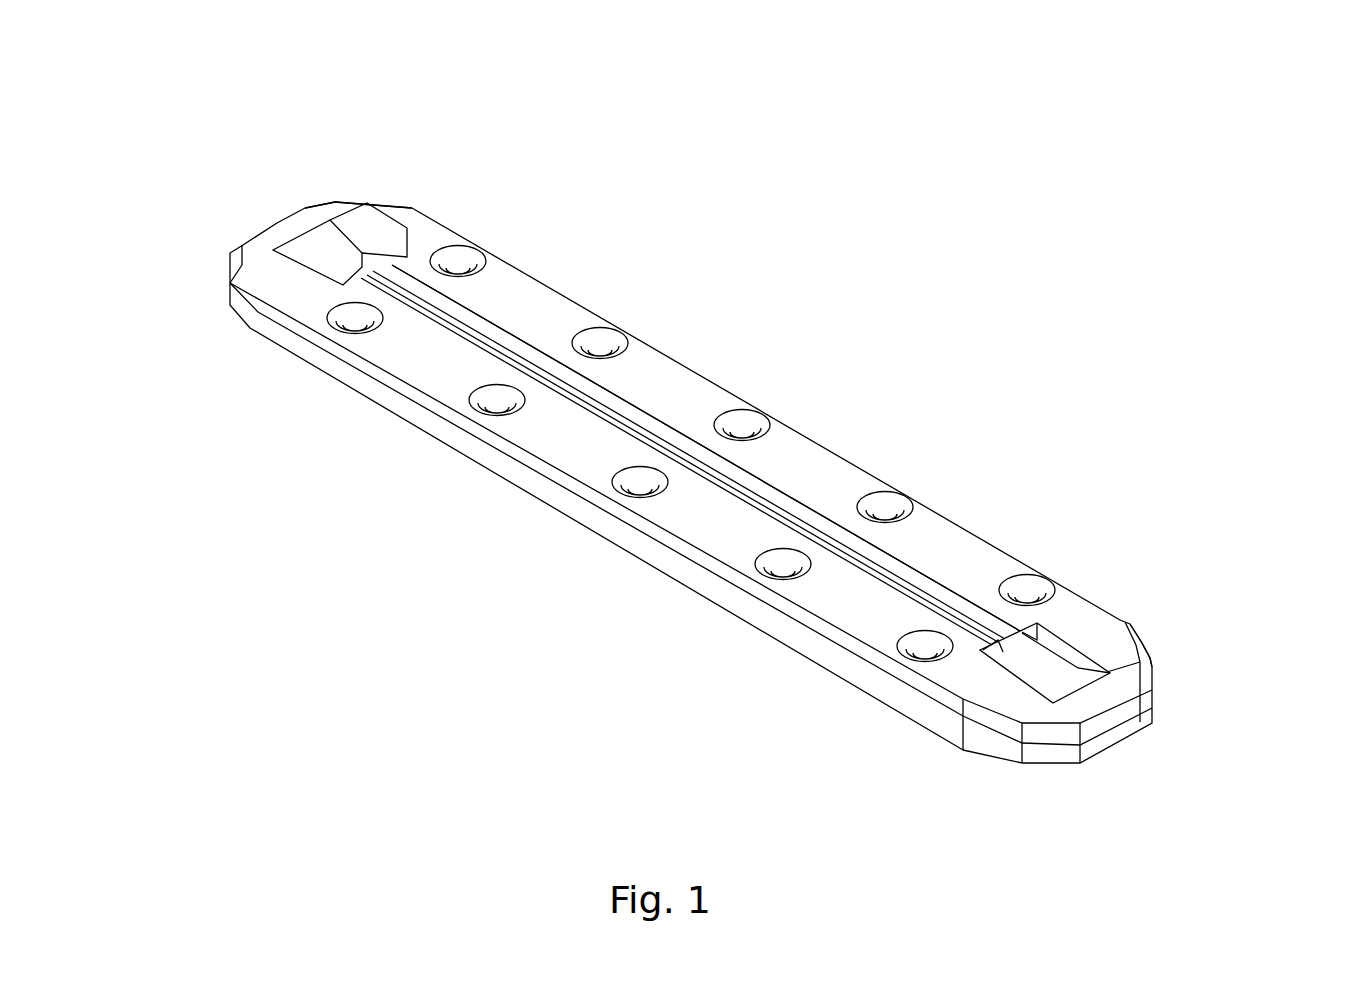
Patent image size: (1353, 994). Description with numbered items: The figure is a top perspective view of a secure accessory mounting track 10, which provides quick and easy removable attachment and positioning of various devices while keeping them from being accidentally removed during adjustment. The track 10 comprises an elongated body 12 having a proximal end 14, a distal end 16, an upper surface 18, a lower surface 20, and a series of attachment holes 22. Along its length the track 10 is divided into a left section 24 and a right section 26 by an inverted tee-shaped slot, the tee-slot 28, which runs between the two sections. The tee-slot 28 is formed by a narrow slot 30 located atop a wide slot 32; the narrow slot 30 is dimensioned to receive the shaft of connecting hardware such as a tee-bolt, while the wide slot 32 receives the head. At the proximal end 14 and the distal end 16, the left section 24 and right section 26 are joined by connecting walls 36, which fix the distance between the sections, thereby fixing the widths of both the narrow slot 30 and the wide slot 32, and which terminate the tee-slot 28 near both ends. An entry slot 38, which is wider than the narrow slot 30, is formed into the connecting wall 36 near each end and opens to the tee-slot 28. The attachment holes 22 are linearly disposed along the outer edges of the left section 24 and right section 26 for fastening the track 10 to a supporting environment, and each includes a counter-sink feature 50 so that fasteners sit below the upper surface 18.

The secure accessory mounting track 10 is at (940, 148).
The elongated body 12 is at (724, 380).
The proximal end 14 is at (1212, 736).
The distal end 16 is at (298, 140).
The upper surface 18 is at (822, 468).
The lower surface 20 is at (810, 665).
The attachment hole 22 is at (892, 496).
The left section 24 is at (532, 312).
The right section 26 is at (532, 428).
The tee-slot 28 is at (639, 400).
The narrow slot 30 is at (812, 514).
The wide slot 32 is at (1013, 660).
The connecting wall 36 is at (362, 203).
The entry slot 38 is at (306, 241).
The counter-sink feature 50 is at (462, 250).